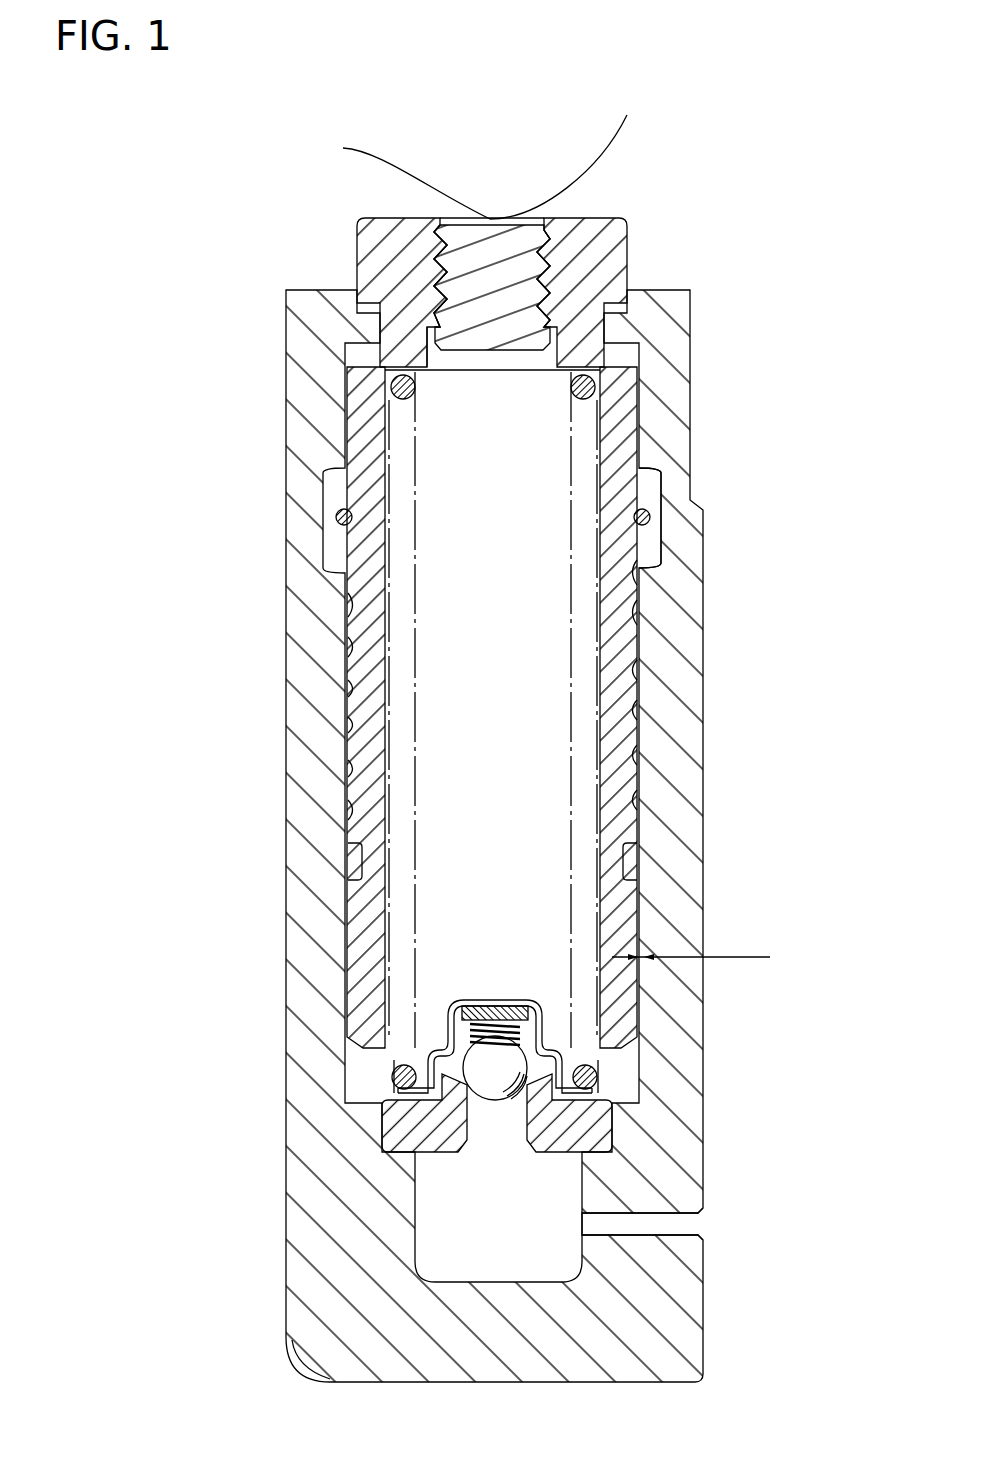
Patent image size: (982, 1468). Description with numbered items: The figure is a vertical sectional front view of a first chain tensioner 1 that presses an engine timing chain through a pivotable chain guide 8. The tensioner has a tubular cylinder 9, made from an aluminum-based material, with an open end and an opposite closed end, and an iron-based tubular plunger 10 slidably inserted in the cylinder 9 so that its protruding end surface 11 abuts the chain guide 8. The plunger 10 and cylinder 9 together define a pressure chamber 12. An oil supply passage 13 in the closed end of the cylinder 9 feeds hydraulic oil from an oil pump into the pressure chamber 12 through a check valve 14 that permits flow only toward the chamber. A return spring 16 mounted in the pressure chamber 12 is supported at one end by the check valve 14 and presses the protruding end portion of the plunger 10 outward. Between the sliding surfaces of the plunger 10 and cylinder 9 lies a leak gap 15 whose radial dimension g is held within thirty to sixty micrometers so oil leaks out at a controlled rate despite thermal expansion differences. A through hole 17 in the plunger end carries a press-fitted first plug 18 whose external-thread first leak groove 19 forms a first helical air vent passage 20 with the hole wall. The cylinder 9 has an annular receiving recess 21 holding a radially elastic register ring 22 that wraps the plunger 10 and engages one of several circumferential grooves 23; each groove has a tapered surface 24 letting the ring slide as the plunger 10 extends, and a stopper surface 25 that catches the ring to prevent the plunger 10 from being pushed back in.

The first chain tensioner 1 is at (645, 200).
The chain guide 8 is at (422, 194).
The cylinder 9 is at (704, 688).
The plunger 10 is at (622, 618).
The protruding end surface 11 is at (381, 218).
The pressure chamber 12 is at (478, 762).
The oil supply passage 13 is at (651, 1226).
The check valve 14 is at (503, 1060).
The leak gap 15 is at (643, 902).
The return spring 16 is at (400, 1060).
The through hole 17 is at (425, 311).
The first plug 18 is at (487, 352).
The first leak groove 19 is at (533, 281).
The first helical air vent passage 20 is at (550, 309).
The receiving recess 21 is at (646, 534).
The register ring 22 is at (650, 509).
The circumferential grooves 23 is at (352, 683).
The tapered surface 24 is at (348, 645).
The stopper surface 25 is at (348, 600).
The radial dimension of the leak gap g is at (691, 941).